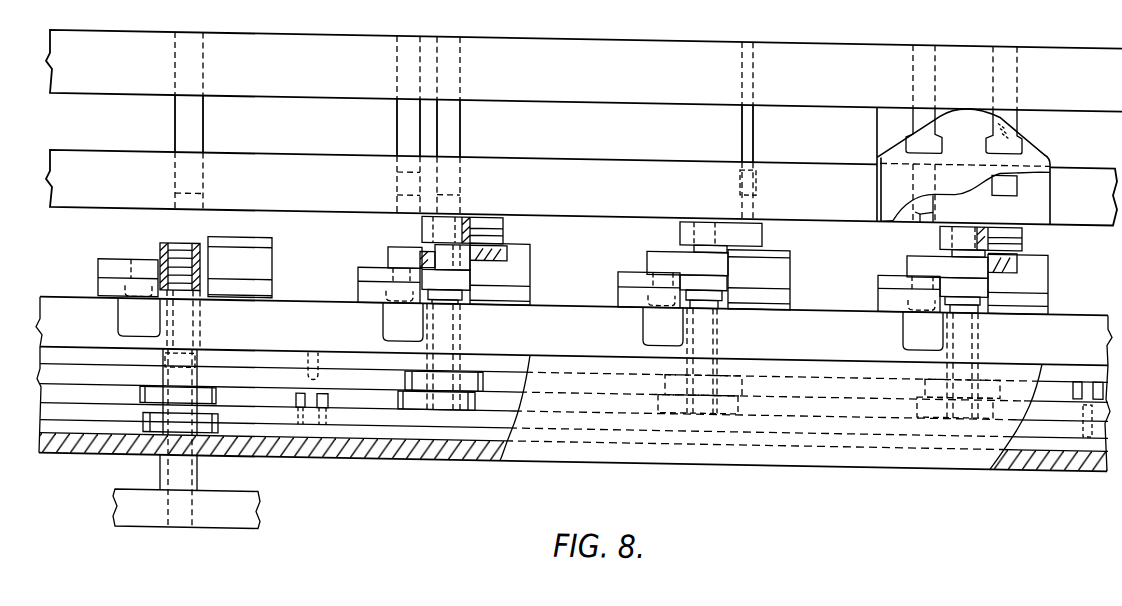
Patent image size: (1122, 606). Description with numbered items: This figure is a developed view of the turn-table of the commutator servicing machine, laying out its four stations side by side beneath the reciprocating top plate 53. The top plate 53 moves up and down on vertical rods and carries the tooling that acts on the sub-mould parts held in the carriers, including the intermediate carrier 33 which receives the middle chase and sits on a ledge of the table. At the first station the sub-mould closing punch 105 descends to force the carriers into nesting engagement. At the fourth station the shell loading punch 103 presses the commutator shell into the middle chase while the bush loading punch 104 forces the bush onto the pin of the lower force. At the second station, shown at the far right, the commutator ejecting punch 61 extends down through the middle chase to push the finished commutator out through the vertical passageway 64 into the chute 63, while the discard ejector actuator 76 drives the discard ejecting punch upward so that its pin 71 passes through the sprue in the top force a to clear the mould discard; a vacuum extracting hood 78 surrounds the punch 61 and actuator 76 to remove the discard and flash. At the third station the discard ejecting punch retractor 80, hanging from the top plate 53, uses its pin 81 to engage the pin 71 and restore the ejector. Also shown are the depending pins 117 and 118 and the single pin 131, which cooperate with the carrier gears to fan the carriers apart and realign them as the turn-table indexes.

The top plate 53 is at (860, 42).
The sub-mould closing punch 105 is at (193, 111).
The bush loading punch 104 is at (448, 123).
The shell loading punch 103 is at (395, 170).
The discard ejecting punch retractor 80 is at (755, 115).
The pin 81 is at (752, 177).
The vacuum extracting hood 78 is at (1052, 191).
The discard ejector actuator 76 is at (1002, 178).
The commutator ejecting punch 61 is at (920, 198).
The intermediate carrier 33 is at (922, 252).
The vertical passageway 64 is at (878, 285).
The chute 63 is at (903, 327).
The pin 71 is at (487, 249).
The pin 131 is at (320, 364).
The pin 118 is at (1075, 373).
The pin 117 is at (1097, 371).
The top force a is at (178, 242).